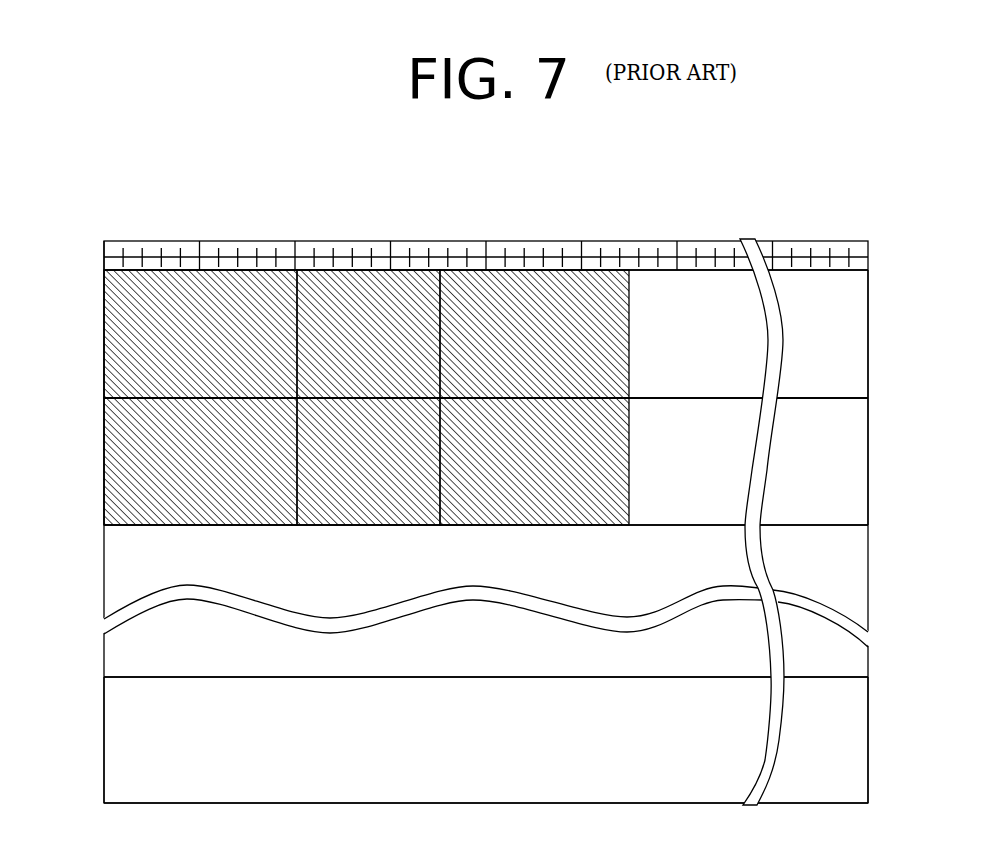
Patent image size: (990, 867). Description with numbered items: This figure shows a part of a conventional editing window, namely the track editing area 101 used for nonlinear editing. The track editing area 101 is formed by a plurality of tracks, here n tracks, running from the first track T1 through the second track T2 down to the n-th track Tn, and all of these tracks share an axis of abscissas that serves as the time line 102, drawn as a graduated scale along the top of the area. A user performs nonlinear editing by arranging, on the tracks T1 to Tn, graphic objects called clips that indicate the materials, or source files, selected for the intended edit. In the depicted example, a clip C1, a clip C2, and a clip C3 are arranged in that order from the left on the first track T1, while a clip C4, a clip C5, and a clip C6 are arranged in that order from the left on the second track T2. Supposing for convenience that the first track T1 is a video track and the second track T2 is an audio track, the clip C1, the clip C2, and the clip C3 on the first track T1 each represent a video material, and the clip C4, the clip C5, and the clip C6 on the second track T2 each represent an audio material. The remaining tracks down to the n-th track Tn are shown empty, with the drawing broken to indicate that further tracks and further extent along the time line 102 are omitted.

The track editing area 101 is at (313, 208).
The time line 102 is at (553, 240).
The first track T1 is at (843, 342).
The second track T2 is at (843, 472).
The n-th track Tn is at (845, 750).
The clip C1 is at (200, 334).
The clip C2 is at (368, 334).
The clip C3 is at (534, 334).
The clip C4 is at (200, 461).
The clip C5 is at (368, 461).
The clip C6 is at (534, 461).